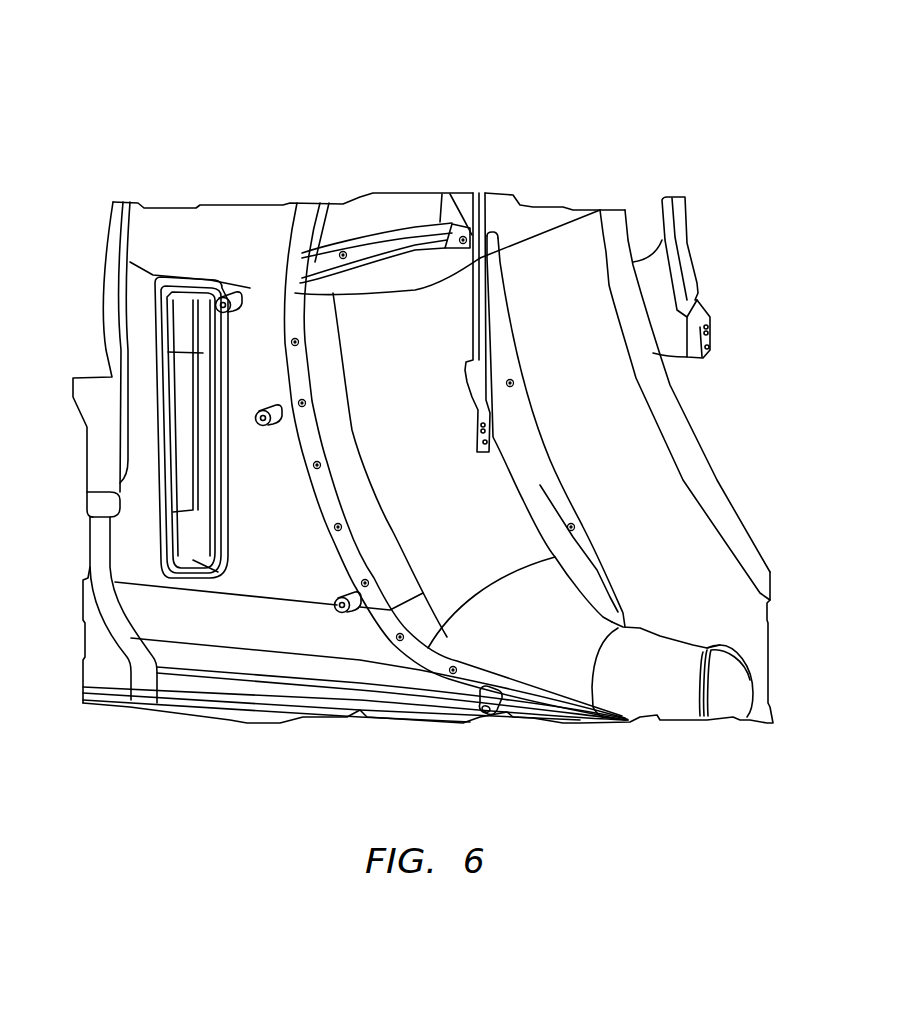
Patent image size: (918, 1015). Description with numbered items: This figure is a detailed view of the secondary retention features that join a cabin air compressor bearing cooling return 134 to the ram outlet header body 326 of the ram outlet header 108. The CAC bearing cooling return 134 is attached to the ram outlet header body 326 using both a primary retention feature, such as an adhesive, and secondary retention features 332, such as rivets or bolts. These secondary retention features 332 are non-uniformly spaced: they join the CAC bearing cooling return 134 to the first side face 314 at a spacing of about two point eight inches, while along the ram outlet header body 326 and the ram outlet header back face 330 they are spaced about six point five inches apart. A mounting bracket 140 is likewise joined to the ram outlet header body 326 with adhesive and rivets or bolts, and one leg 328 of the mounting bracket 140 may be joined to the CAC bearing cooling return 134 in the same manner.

The ram outlet header 108 is at (135, 90).
The CAC bearing cooling return 134 is at (467, 563).
The mounting bracket 140 is at (474, 196).
The first side face 314 is at (283, 583).
The ram outlet header body 326 is at (423, 208).
The leg 328 is at (490, 417).
The ram outlet header back face 330 is at (640, 503).
The secondary retention features 332 is at (293, 403).